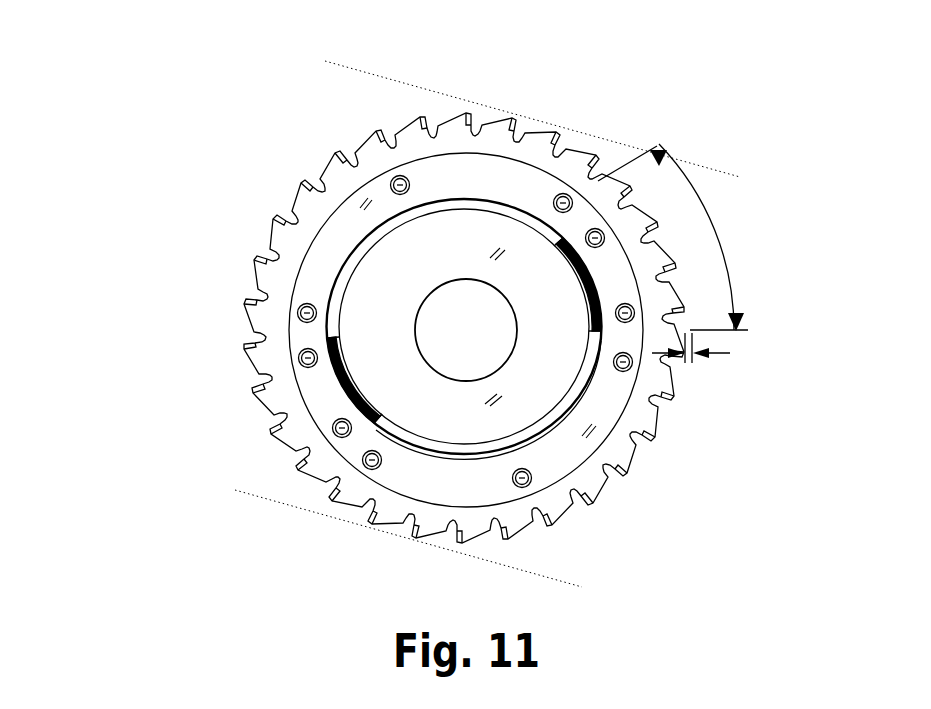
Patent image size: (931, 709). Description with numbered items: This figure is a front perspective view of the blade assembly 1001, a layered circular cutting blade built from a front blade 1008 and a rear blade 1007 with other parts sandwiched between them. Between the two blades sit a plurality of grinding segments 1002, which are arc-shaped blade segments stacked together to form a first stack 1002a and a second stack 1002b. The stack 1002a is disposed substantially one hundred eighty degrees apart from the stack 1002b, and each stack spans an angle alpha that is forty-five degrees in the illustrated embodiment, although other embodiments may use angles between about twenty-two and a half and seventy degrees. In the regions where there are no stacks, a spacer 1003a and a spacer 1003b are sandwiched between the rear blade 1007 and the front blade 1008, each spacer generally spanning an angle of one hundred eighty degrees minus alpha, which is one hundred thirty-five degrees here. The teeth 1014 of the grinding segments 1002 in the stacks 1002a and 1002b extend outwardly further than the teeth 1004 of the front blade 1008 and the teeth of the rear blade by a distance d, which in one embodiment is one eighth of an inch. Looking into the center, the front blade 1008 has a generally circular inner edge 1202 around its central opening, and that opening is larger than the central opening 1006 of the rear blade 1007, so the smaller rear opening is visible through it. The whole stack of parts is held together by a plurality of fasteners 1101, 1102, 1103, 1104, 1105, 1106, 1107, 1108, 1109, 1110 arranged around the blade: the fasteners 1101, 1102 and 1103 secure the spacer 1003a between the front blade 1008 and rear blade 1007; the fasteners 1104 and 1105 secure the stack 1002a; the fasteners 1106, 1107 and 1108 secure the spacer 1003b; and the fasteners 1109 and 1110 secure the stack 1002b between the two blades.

The blade assembly 1001 is at (653, 58).
The grinding segments 1002 is at (270, 378).
The stack of grinding segments 1002a is at (673, 205).
The stack of grinding segments 1002b is at (238, 414).
The spacer 1003a is at (440, 127).
The spacer 1003b is at (597, 485).
The teeth of the front blade 1004 is at (372, 150).
The central opening of the rear blade 1006 is at (498, 344).
The rear blade 1007 is at (410, 314).
The front blade 1008 is at (514, 105).
The teeth of the grinding segments 1014 is at (683, 299).
The fastener 1101 is at (302, 305).
The fastener 1102 is at (396, 178).
The fastener 1103 is at (564, 194).
The fastener 1104 is at (590, 247).
The fastener 1105 is at (619, 322).
The fastener 1106 is at (626, 372).
The fastener 1107 is at (522, 488).
The fastener 1108 is at (366, 468).
The fastener 1109 is at (335, 436).
The fastener 1110 is at (300, 351).
The inner edge 1202 is at (407, 462).